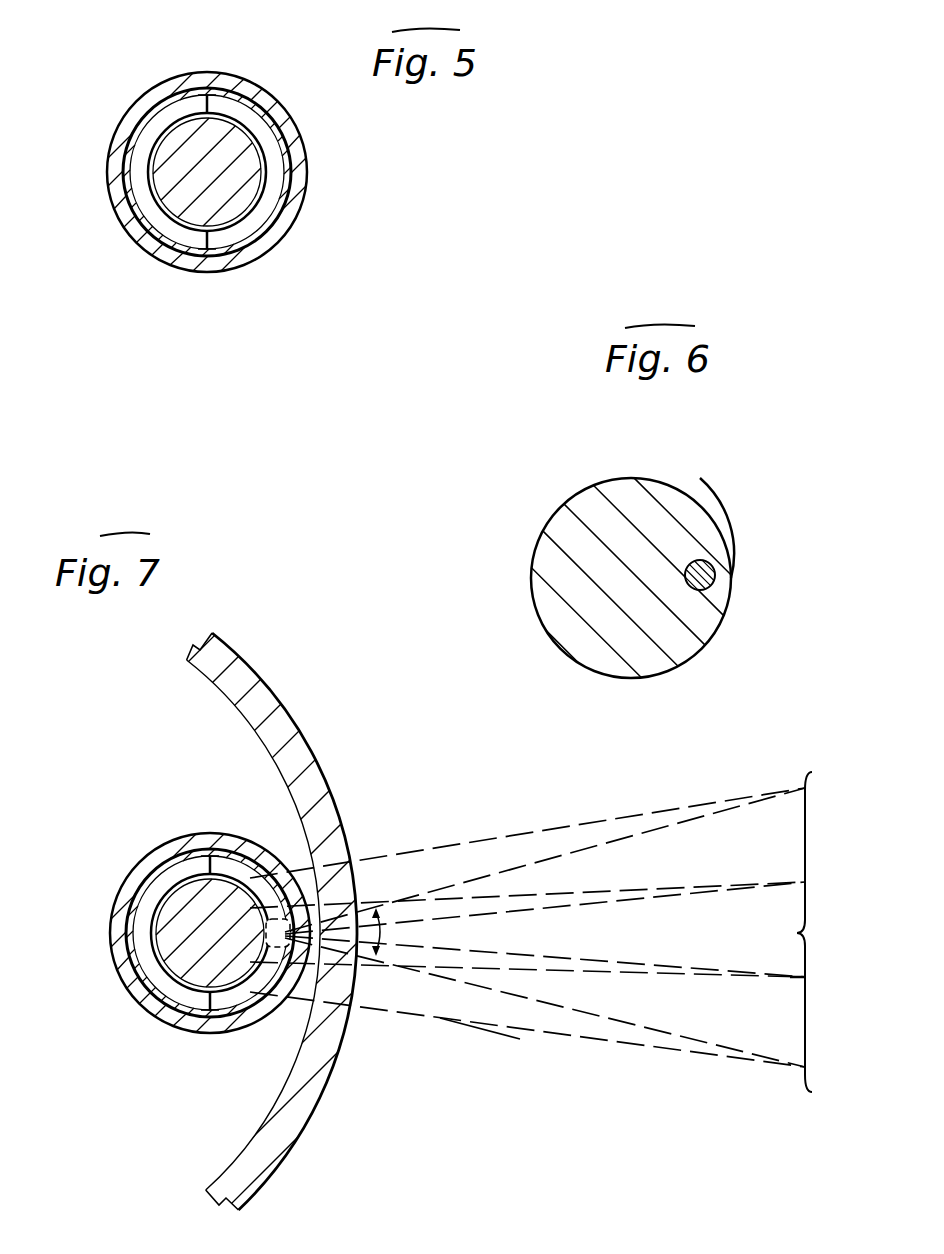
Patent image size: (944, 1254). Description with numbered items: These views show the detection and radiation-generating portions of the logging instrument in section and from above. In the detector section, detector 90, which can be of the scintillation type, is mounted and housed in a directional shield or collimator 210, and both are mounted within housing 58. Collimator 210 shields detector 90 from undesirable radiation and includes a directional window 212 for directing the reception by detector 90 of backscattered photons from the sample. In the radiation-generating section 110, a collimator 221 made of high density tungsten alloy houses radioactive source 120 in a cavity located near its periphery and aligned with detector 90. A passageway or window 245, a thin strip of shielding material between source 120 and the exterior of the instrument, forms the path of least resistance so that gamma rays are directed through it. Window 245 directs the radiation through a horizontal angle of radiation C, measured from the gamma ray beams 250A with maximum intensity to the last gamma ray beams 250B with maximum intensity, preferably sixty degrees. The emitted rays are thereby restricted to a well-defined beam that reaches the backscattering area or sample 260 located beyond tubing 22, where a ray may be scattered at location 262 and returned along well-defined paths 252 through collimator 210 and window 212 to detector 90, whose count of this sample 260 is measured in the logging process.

In FIG. 5, the housing 58 is at (143, 100).
In FIG. 7, the housing 58 is at (210, 933).
In FIG. 5, the detector 90 is at (268, 176).
In FIG. 7, the detector 90 is at (165, 933).
In FIG. 5, the directional shield or collimator 210 is at (168, 238).
In FIG. 7, the directional shield or collimator 210 is at (210, 933).
In FIG. 5, the directional window 212 is at (218, 243).
In FIG. 7, the directional window 212 is at (218, 897).
In FIG. 6, the collimator 221 is at (700, 522).
In FIG. 6, the radioactive source 120 is at (713, 570).
In FIG. 7, the radioactive source 120 is at (266, 935).
In FIG. 6, the passageway or window 245 is at (722, 582).
In FIG. 6, the radiation-generating section 110 is at (724, 625).
In FIG. 7, the tubing 22 is at (336, 800).
In FIG. 7, the gamma ray beams with maximum intensity 250A is at (570, 1015).
In FIG. 7, the last gamma ray beams with maximum intensity 250B is at (588, 848).
In FIG. 7, the paths 252 is at (453, 1020).
In FIG. 7, the horizontal angle of radiation C is at (385, 931).
In FIG. 7, the backscattering area or sample 260 is at (828, 932).
In FIG. 7, the location 262 is at (805, 978).